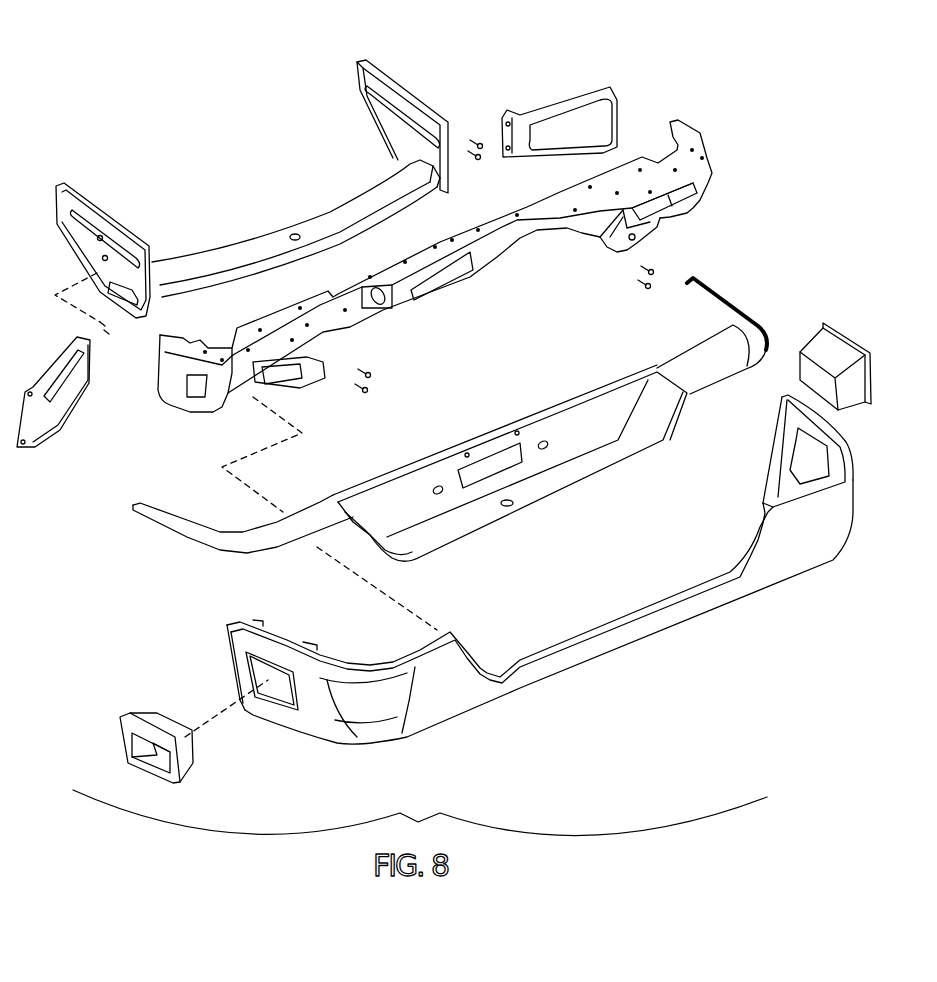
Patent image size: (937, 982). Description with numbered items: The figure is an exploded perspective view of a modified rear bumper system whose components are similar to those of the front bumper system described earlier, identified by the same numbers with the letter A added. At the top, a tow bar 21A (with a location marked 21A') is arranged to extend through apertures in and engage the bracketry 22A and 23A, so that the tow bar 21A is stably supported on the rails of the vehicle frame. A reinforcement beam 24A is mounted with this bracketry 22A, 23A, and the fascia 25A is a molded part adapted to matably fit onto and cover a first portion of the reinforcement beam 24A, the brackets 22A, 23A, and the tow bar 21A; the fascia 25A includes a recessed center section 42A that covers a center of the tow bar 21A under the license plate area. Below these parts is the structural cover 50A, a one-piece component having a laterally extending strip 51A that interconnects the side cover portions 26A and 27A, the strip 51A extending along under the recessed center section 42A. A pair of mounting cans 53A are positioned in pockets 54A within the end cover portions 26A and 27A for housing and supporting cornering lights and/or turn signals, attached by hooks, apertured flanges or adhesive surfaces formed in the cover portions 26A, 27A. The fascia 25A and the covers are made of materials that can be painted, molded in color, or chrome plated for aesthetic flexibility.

The tow bar 21A is at (308, 228).
The hole in bumper beam 21A' is at (272, 210).
The bracketry 22A is at (100, 160).
The bracketry 23A is at (623, 73).
The reinforcement beam 24A is at (704, 126).
The fascia 25A is at (721, 272).
The side cover portion 26A is at (325, 743).
The side cover portion 27A is at (790, 417).
The recessed center section 42A is at (565, 487).
The structural cover 50A is at (485, 396).
The laterally extending strip 51A is at (585, 667).
The mounting can 53A is at (790, 372).
The pocket 54A is at (268, 678).